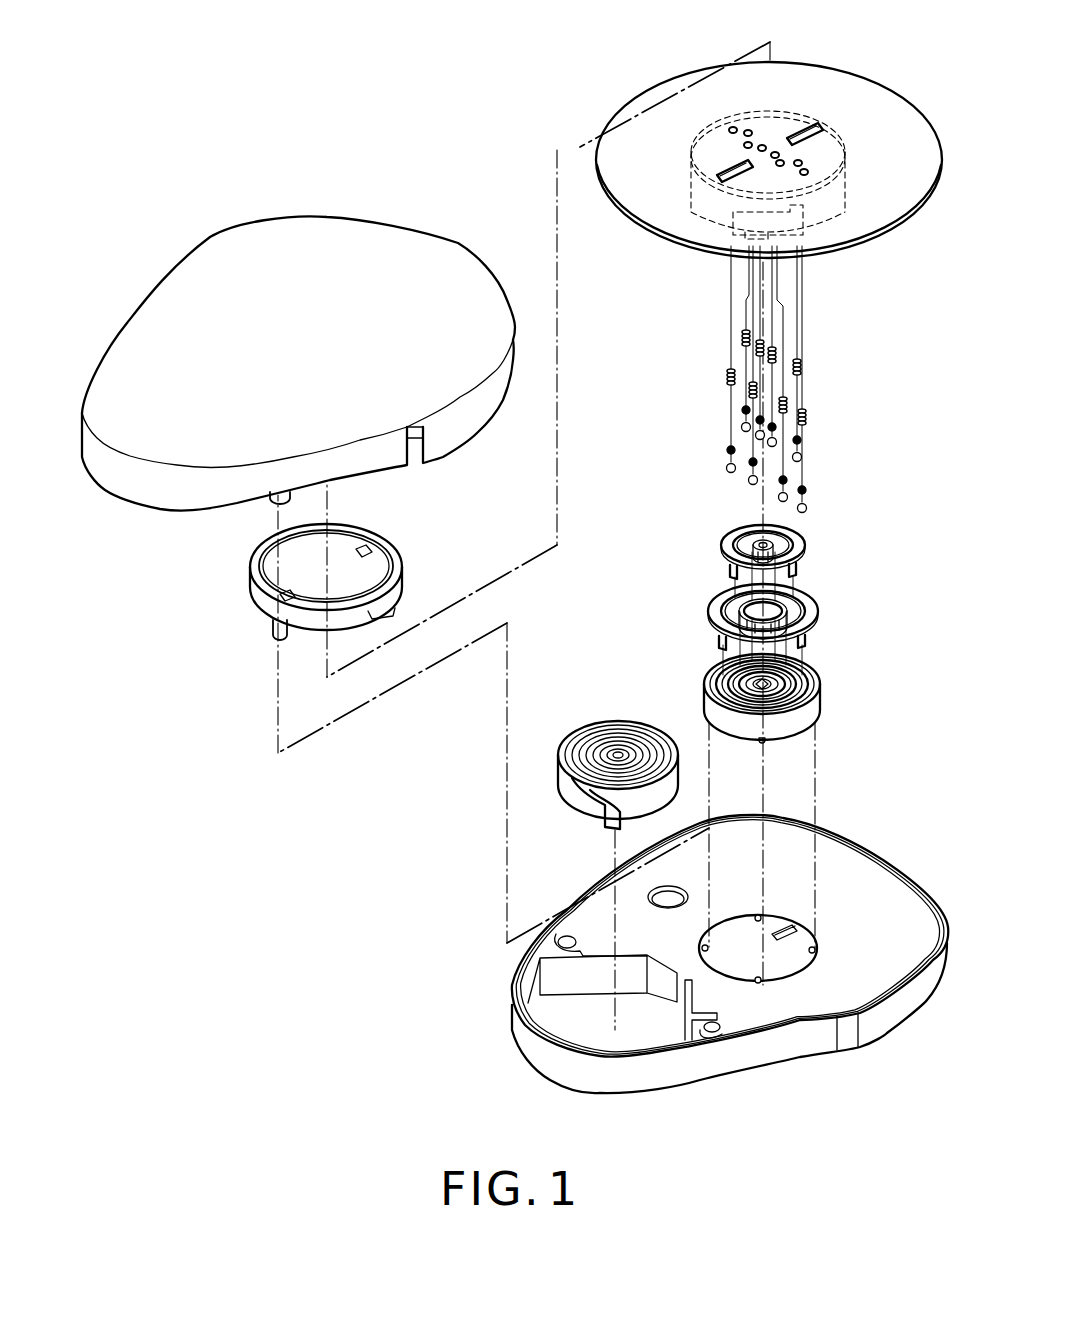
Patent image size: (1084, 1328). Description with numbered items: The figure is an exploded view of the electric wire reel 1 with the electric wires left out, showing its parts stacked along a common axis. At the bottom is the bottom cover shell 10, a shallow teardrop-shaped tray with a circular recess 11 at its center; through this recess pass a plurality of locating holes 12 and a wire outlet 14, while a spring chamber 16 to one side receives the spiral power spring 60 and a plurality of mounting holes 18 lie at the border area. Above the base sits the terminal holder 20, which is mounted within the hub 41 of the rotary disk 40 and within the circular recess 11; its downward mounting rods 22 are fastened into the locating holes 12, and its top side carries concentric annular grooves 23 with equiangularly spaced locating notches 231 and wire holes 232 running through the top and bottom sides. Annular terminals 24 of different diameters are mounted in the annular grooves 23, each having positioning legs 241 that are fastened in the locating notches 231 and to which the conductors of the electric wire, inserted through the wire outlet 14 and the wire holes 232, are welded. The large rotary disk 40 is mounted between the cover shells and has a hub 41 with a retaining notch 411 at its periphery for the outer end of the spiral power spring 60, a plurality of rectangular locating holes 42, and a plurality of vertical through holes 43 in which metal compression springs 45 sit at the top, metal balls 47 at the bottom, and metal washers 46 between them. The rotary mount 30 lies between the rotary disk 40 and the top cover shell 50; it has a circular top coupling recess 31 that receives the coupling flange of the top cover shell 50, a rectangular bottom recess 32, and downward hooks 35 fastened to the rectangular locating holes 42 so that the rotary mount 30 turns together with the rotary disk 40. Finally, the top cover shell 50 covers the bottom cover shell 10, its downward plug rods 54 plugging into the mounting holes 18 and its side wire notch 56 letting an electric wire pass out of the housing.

The massage device 1 is at (443, 120).
The bottom cover shell 10 is at (760, 1062).
The circular recess 11 is at (740, 963).
The locating holes 12 is at (762, 983).
The wire outlet 14 is at (790, 936).
The spring chamber 16 is at (585, 1018).
The mounting holes 18 is at (565, 945).
The terminal holder 20 is at (820, 708).
The downward mounting rods 22 is at (768, 742).
The annular grooves 23 is at (823, 681).
The locating notches 231 is at (732, 662).
The wire holes 232 is at (713, 699).
The annular terminals 24 is at (752, 532).
The positioning legs 241 is at (733, 572).
The rotary mount 30 is at (255, 587).
The circular top coupling recess 31 is at (350, 542).
The rectangular bottom recess 32 is at (397, 610).
The downward hooks 35 is at (270, 633).
The rotary disk 40 is at (668, 85).
The hub 41 is at (823, 210).
The retaining notch 411 is at (745, 225).
The rectangular locating holes 42 is at (812, 128).
The vertical through holes 43 is at (810, 172).
The metal compression springs 45 is at (727, 378).
The metal washers 46 is at (727, 452).
The metal balls 47 is at (726, 468).
The top cover shell 50 is at (287, 243).
The downward plug rods 54 is at (272, 500).
The side wire notch 56 is at (418, 448).
The spiral power spring 60 is at (592, 737).